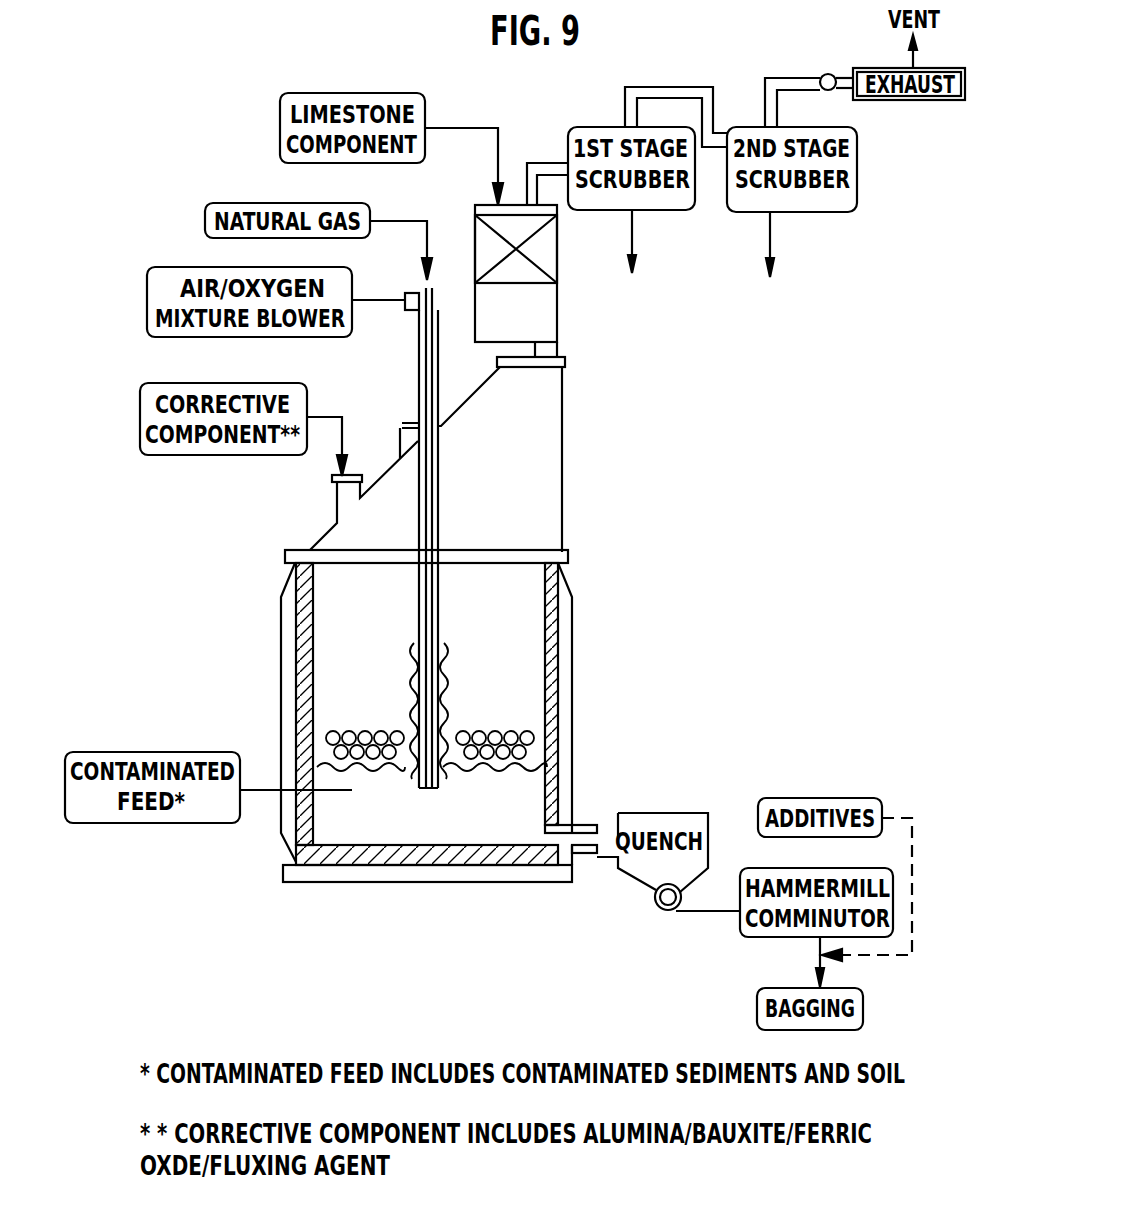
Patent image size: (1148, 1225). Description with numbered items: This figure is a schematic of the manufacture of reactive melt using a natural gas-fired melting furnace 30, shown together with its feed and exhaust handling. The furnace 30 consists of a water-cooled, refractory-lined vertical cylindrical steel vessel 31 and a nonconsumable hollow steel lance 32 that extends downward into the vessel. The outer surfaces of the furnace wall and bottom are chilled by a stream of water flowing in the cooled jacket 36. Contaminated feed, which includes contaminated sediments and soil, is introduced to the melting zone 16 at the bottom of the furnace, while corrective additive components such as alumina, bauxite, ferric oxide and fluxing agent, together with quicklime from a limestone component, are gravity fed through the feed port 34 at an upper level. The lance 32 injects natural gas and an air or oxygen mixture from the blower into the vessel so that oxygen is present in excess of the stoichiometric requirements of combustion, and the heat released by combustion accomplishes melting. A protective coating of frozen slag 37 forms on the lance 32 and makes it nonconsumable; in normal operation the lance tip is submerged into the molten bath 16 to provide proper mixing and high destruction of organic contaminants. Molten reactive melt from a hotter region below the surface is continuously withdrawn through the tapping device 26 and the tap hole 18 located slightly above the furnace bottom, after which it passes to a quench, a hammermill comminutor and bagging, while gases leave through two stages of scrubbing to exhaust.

The melting zone 16 is at (388, 823).
The tap hole 18 is at (597, 840).
The tapping device 26 is at (475, 247).
The natural gas-fired melting furnace 30 is at (615, 402).
The vertical cylindrical steel vessel 31 is at (562, 472).
The hollow steel lance 32 is at (433, 517).
The feed port 34 is at (333, 480).
The cooled jacket 36 is at (558, 348).
The frozen slag coating 37 is at (410, 697).